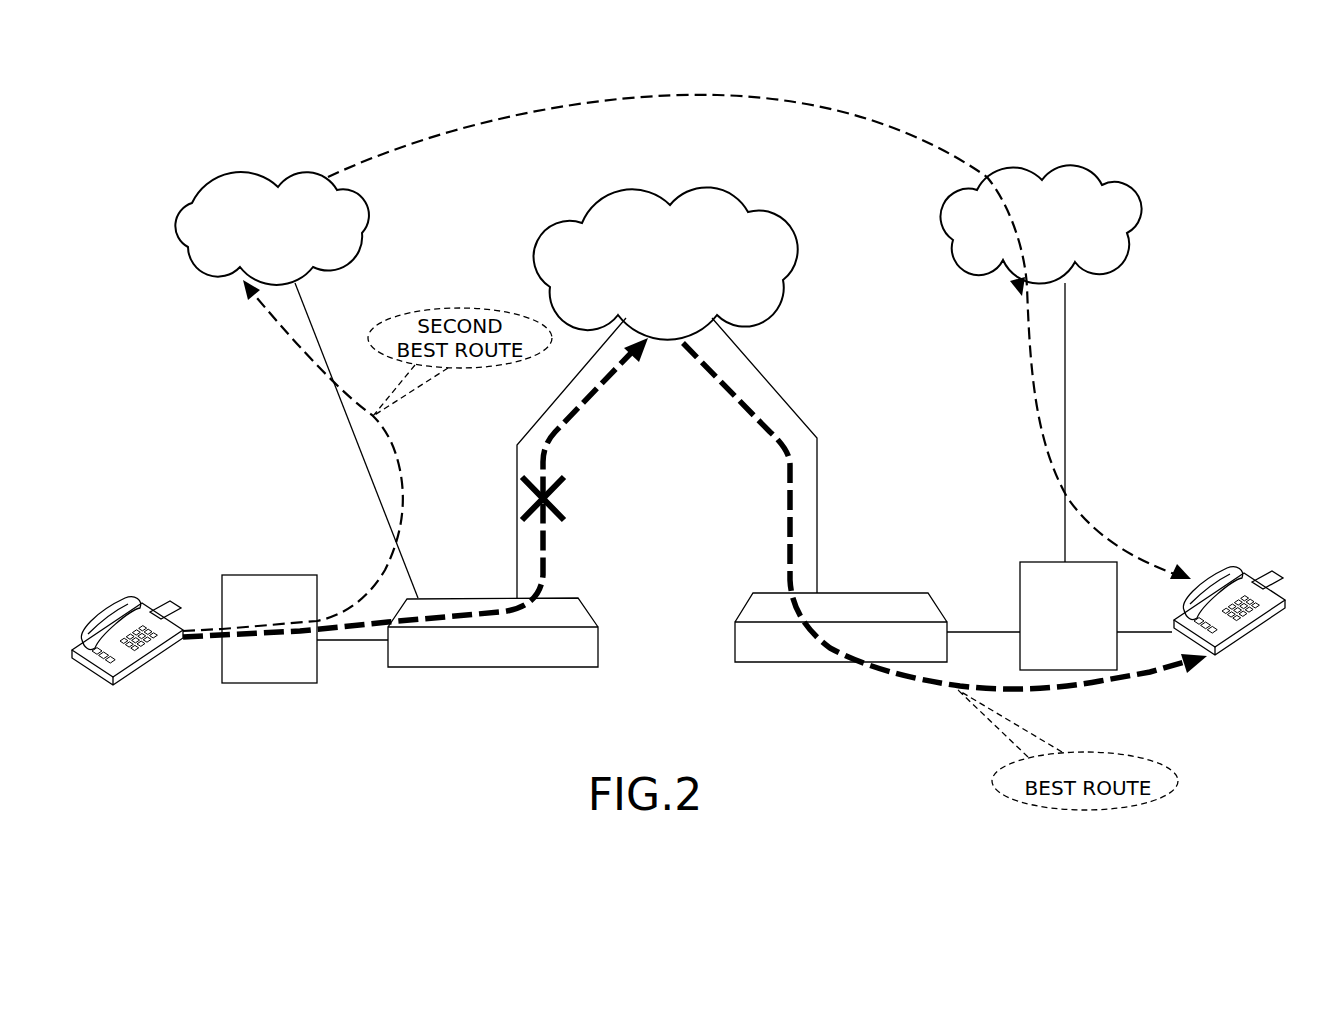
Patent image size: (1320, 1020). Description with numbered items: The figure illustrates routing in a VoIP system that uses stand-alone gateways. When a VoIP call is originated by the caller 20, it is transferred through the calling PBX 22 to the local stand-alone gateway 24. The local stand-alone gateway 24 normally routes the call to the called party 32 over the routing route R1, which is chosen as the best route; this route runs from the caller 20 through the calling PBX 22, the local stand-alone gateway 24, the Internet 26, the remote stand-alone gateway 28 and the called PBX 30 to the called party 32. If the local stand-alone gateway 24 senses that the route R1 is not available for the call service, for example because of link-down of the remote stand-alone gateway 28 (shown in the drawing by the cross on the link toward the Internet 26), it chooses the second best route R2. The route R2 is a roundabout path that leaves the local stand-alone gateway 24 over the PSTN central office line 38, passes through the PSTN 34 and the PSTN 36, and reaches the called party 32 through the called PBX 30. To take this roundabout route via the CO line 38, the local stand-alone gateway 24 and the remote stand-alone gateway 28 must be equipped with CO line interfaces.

The caller 20 is at (140, 600).
The calling PBX 22 is at (238, 575).
The local stand-alone gateway 24 is at (472, 598).
The Internet 26 is at (745, 205).
The remote stand-alone gateway 28 is at (910, 593).
The called PBX 30 is at (1040, 562).
The called party 32 is at (1240, 568).
The PSTN 34 is at (240, 170).
The PSTN 36 is at (1080, 165).
The PSTN central office (CO) line 38 is at (316, 330).
The routing route R1 is at (560, 437).
The second best route R2 is at (603, 97).